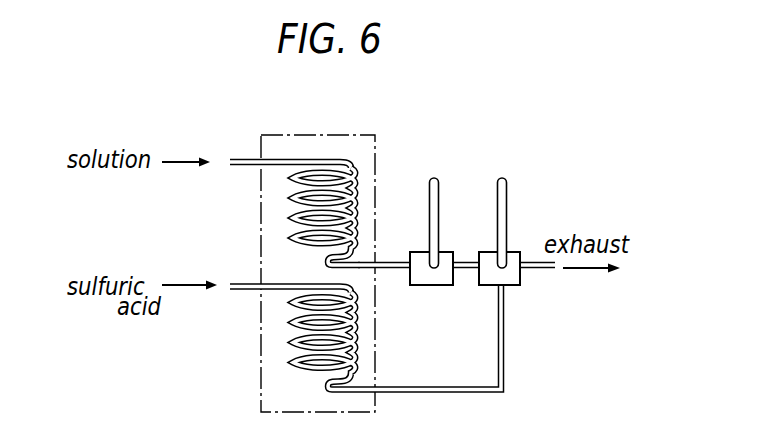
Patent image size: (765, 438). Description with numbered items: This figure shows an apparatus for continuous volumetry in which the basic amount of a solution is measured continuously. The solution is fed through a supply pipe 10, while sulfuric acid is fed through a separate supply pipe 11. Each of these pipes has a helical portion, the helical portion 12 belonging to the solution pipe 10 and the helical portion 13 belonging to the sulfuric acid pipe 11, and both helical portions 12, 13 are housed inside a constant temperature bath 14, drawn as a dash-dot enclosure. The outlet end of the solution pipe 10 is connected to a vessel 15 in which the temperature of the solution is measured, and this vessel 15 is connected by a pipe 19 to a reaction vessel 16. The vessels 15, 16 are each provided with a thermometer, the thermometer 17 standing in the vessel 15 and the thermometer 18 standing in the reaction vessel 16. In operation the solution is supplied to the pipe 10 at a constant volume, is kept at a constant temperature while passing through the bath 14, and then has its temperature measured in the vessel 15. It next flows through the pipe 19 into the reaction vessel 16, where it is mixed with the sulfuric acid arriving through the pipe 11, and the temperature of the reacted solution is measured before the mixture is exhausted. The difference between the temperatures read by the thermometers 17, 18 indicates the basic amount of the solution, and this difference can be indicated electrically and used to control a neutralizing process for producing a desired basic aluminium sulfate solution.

The supply pipe of the solution 10 is at (245, 157).
The supply pipe of sulfuric acid 11 is at (243, 291).
The helical portion of the solution supply pipe 12 is at (292, 205).
The helical portion of the sulfuric acid supply pipe 13 is at (293, 353).
The constant temperature bath 14 is at (377, 172).
The vessel for measuring the temperature of solution 15 is at (433, 287).
The reaction vessel 16 is at (509, 287).
The thermometer 17 is at (439, 192).
The thermometer 18 is at (507, 195).
The pipe 19 is at (467, 262).